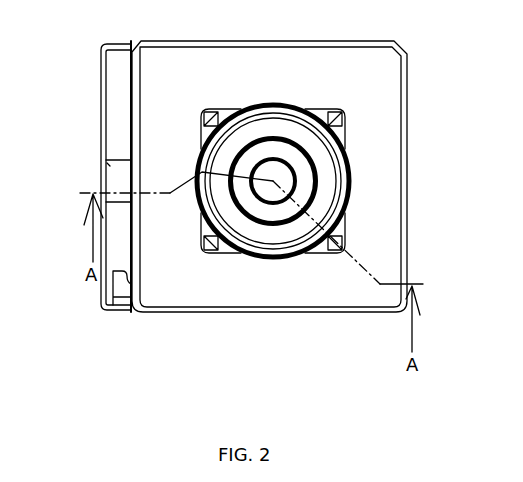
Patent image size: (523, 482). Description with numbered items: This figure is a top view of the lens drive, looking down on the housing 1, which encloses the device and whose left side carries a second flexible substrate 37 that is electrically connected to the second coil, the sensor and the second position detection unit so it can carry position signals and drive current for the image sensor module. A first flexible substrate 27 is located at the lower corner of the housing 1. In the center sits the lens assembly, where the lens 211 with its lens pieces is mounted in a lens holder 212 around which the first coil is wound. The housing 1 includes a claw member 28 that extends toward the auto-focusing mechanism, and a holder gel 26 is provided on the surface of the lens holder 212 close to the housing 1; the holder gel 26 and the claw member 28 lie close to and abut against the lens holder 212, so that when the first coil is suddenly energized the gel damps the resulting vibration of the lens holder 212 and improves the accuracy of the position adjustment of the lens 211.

The housing 1 is at (391, 205).
The second flexible substrate 37 is at (113, 112).
The first flexible substrate 27 is at (119, 293).
The holder gel 26 is at (338, 112).
The claw member 28 is at (340, 128).
The lens holder 212 is at (342, 140).
The lens 211 is at (285, 175).